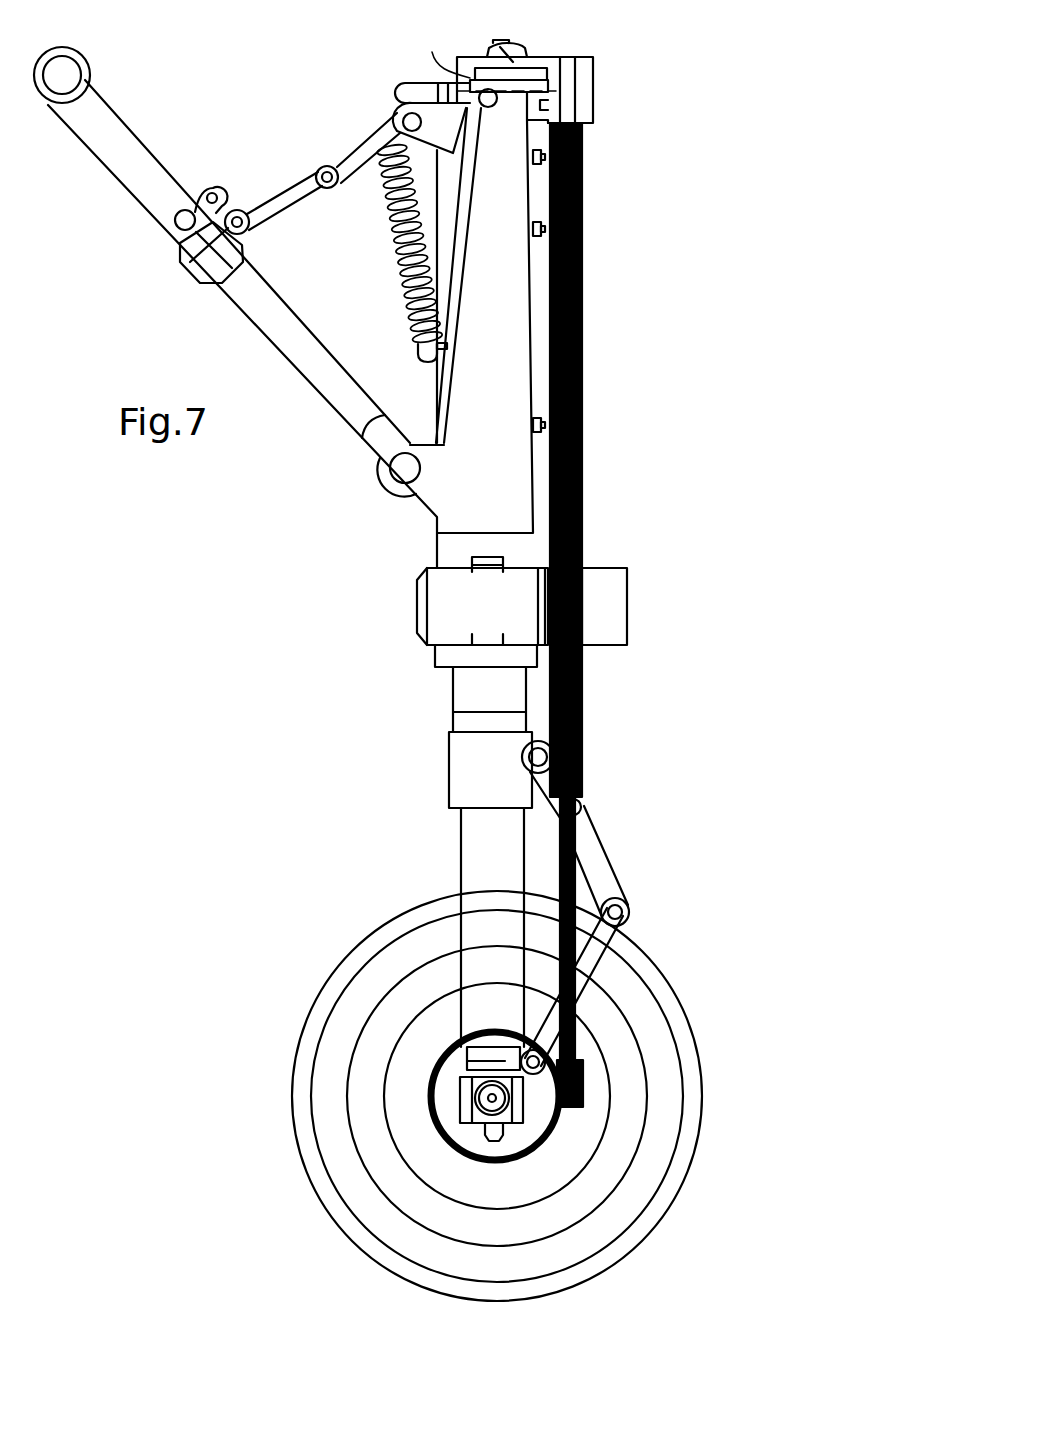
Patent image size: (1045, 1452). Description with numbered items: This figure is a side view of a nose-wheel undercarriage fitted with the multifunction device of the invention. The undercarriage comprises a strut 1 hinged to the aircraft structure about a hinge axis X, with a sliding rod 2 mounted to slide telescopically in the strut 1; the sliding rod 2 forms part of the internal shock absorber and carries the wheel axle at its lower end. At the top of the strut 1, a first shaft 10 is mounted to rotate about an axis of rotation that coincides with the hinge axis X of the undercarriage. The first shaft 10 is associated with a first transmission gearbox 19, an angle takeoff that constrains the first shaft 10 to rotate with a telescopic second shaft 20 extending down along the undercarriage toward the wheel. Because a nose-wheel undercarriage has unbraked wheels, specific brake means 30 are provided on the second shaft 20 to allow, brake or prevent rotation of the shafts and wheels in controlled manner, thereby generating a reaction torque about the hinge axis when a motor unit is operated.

The strut 1 is at (426, 496).
The sliding rod 2 is at (476, 847).
The first shaft 10 is at (520, 53).
The first transmission gearbox 19 is at (581, 82).
The telescopic second shaft 20 is at (584, 258).
The brake means 30 is at (612, 592).